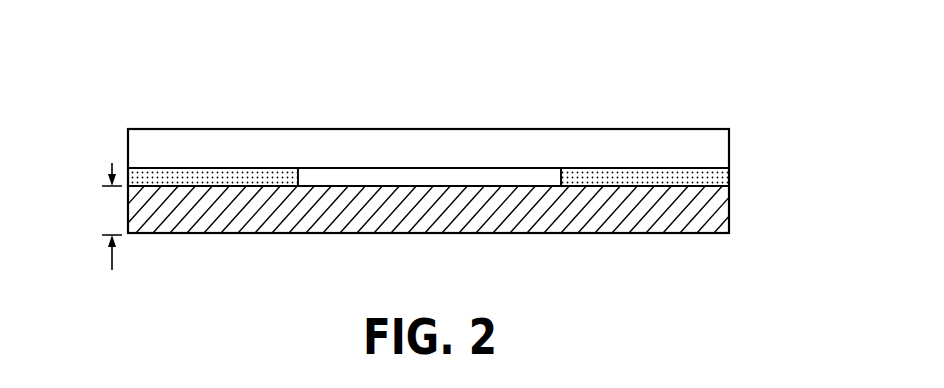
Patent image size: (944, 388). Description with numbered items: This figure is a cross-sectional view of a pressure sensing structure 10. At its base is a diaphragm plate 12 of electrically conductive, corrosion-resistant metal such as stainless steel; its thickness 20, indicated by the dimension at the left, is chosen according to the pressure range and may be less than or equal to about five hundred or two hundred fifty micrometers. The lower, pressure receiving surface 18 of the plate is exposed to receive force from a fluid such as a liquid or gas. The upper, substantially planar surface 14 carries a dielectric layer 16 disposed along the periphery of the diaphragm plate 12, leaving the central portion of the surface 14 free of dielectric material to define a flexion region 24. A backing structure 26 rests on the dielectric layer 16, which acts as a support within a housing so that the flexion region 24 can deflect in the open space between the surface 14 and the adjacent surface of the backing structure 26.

The pressure sensing structure 10 is at (737, 46).
The diaphragm plate 12 is at (729, 216).
The planar surface 14 is at (502, 185).
The dielectric layer 16 is at (729, 177).
The pressure receiving surface 18 is at (643, 233).
The thickness 20 is at (112, 165).
The flexion region 24 is at (402, 158).
The backing structure 26 is at (729, 148).